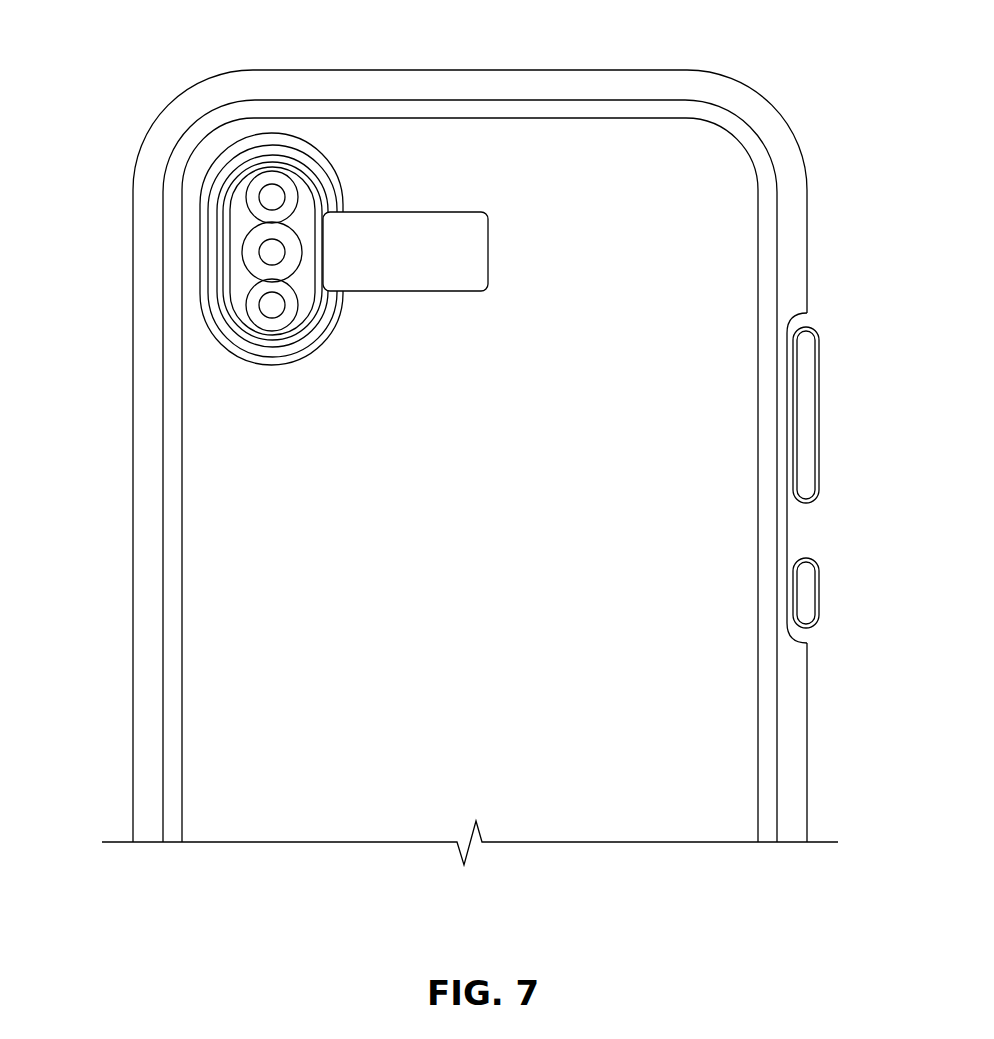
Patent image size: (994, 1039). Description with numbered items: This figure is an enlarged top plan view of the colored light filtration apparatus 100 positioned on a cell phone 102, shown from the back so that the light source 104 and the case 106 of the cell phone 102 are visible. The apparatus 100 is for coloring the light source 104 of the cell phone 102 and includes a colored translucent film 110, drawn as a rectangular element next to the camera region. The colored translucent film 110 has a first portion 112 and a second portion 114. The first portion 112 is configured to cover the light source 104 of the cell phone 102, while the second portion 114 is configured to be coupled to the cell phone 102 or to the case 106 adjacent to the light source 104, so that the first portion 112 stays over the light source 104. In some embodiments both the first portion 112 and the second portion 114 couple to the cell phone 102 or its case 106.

The apparatus 100 is at (618, 223).
The cell phone 102 is at (725, 60).
The light source 104 is at (262, 253).
The case 106 is at (258, 644).
The colored translucent film 110 is at (432, 271).
The first portion 112 is at (288, 212).
The second portion 114 is at (439, 306).